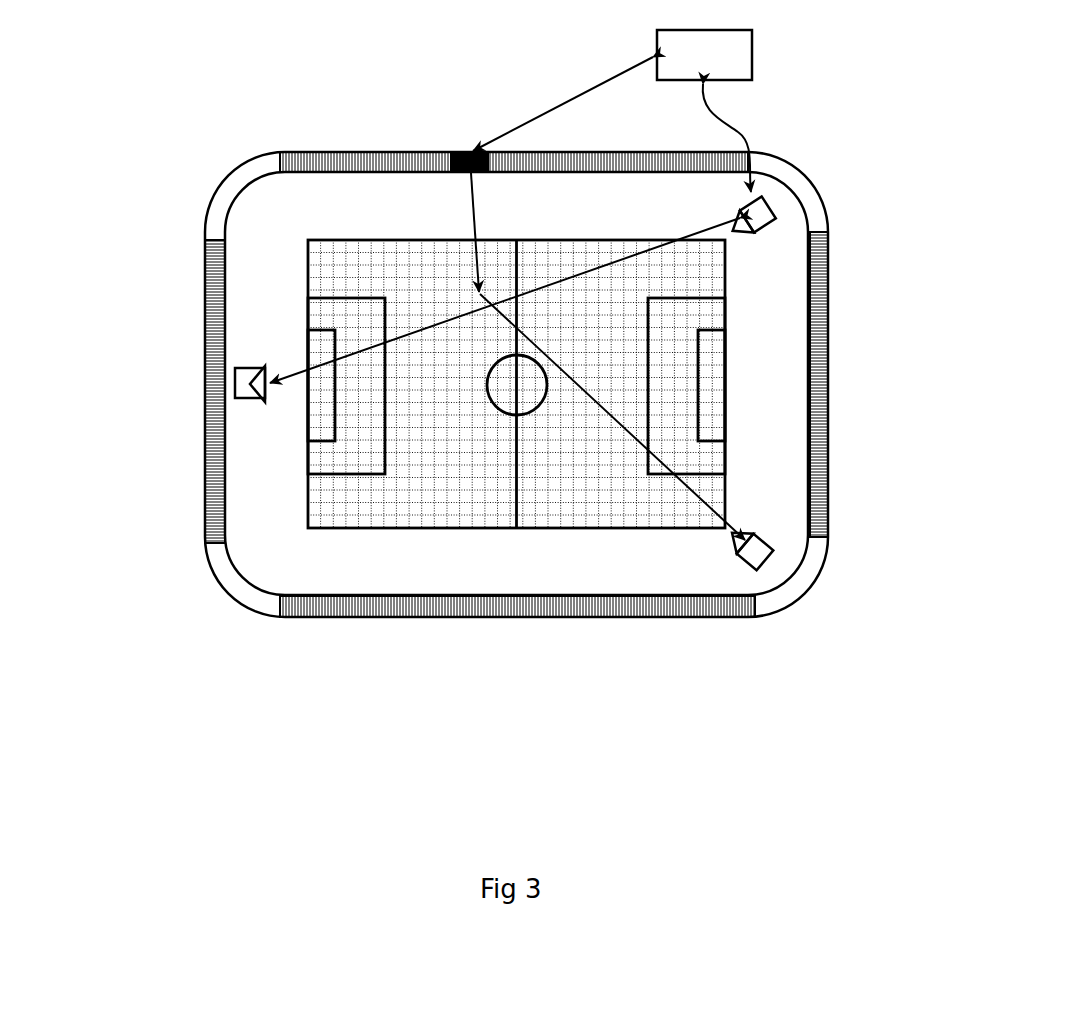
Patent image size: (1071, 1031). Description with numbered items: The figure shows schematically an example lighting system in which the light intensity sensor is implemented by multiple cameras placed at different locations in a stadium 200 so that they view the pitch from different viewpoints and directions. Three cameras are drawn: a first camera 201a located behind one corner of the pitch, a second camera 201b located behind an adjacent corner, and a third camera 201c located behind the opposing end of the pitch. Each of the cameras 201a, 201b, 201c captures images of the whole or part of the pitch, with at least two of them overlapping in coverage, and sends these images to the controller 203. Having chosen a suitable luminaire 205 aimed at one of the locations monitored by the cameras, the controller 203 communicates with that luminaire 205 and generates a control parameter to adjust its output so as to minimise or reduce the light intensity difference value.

The stadium 200 is at (226, 140).
The controller 203 is at (667, 111).
The luminaire 205 is at (598, 346).
The first camera 201a is at (591, 289).
The second camera 201b is at (821, 528).
The third camera 201c is at (200, 411).